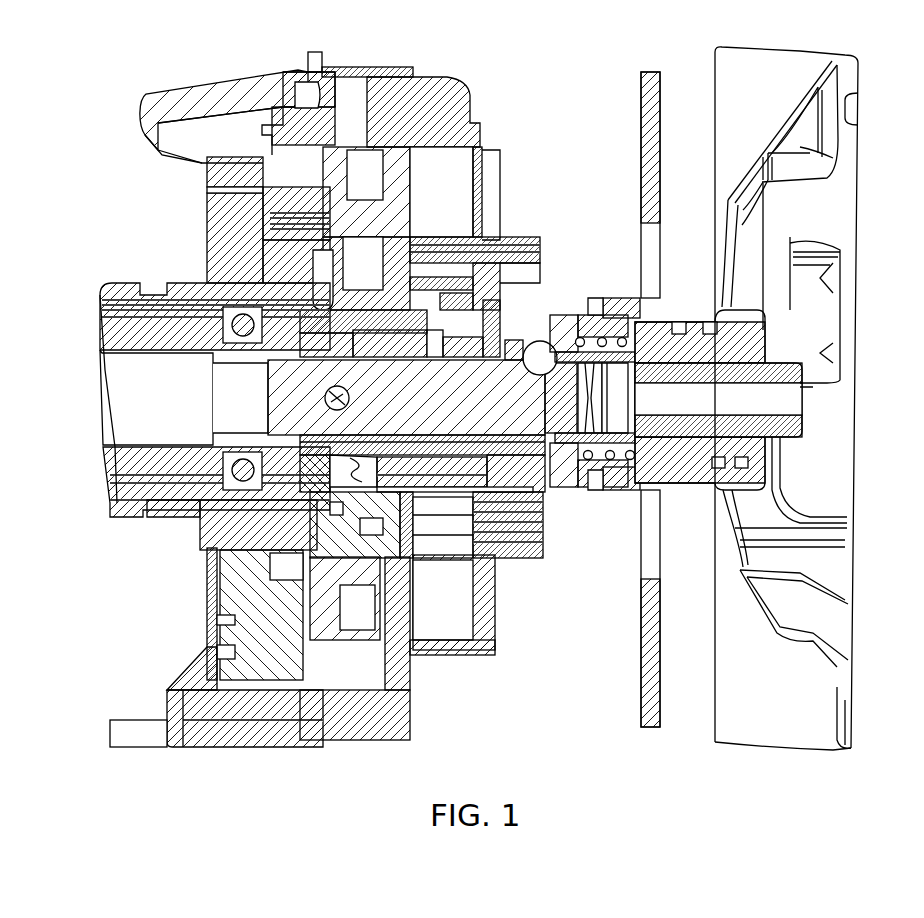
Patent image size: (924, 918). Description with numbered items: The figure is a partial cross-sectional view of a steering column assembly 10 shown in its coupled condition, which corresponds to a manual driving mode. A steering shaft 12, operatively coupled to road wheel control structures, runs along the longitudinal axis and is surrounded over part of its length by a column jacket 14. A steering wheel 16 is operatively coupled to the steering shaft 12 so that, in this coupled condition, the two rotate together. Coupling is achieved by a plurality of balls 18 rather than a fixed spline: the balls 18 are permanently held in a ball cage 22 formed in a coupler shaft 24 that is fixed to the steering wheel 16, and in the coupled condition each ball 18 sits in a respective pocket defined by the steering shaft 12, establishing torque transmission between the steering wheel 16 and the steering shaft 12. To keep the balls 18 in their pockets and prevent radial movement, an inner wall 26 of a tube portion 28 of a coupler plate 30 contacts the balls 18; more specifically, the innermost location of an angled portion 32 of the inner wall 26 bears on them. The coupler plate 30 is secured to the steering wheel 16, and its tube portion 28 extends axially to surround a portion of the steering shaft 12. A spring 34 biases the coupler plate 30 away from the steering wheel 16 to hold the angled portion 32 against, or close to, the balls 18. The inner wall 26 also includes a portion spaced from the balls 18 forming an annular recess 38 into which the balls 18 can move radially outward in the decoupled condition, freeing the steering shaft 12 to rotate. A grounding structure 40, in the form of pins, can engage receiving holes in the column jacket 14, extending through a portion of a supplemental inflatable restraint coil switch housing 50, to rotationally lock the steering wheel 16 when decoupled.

The steering column assembly 10 is at (72, 78).
The steering shaft 12 is at (385, 388).
The column jacket 14 is at (262, 498).
The steering wheel 16 is at (800, 232).
The balls 18 is at (592, 462).
The ball cage 22 is at (592, 338).
The coupler shaft 24 is at (640, 372).
The inner wall 26 is at (556, 460).
The tube portion 28 is at (515, 345).
The coupler plate 30 is at (650, 75).
The angled portion 32 is at (525, 350).
The spring 34 is at (603, 338).
The annular recess 38 is at (498, 348).
The grounding structure 40 is at (390, 500).
The SIR coil switch housing 50 is at (400, 630).